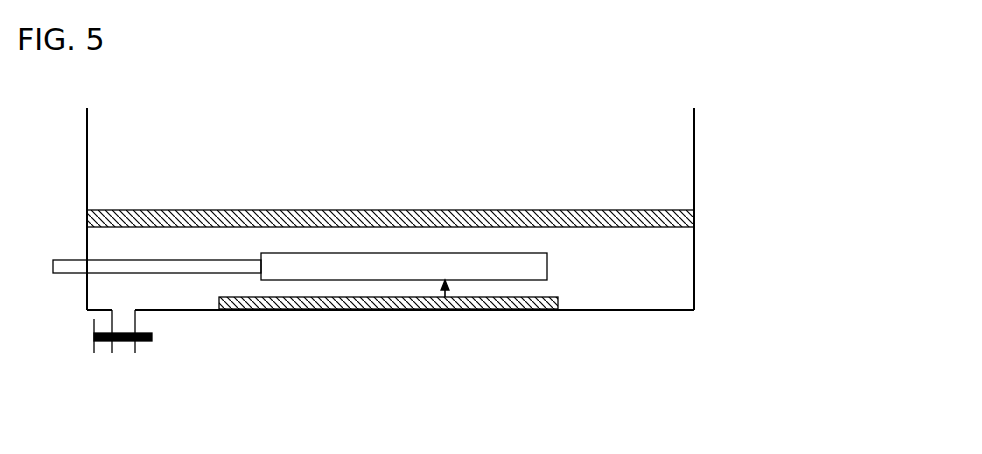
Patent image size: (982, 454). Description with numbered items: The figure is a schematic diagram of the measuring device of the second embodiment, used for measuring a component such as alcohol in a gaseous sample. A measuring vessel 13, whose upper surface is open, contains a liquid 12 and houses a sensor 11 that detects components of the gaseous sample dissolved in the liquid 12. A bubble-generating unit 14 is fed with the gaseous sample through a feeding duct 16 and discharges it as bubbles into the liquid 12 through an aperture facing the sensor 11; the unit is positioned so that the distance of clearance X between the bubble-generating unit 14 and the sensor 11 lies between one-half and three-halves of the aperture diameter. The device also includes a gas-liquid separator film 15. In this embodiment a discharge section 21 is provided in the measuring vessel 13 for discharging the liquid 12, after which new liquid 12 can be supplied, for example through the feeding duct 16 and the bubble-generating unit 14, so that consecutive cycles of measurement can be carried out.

The sensor 11 is at (405, 310).
The liquid 12 is at (678, 275).
The measuring vessel 13 is at (87, 129).
The bubble-generating unit 14 is at (547, 265).
The gas-liquid separator film 15 is at (538, 225).
The feeding duct 16 is at (68, 274).
The discharge section 21 is at (143, 345).
The distance of clearance X is at (460, 310).